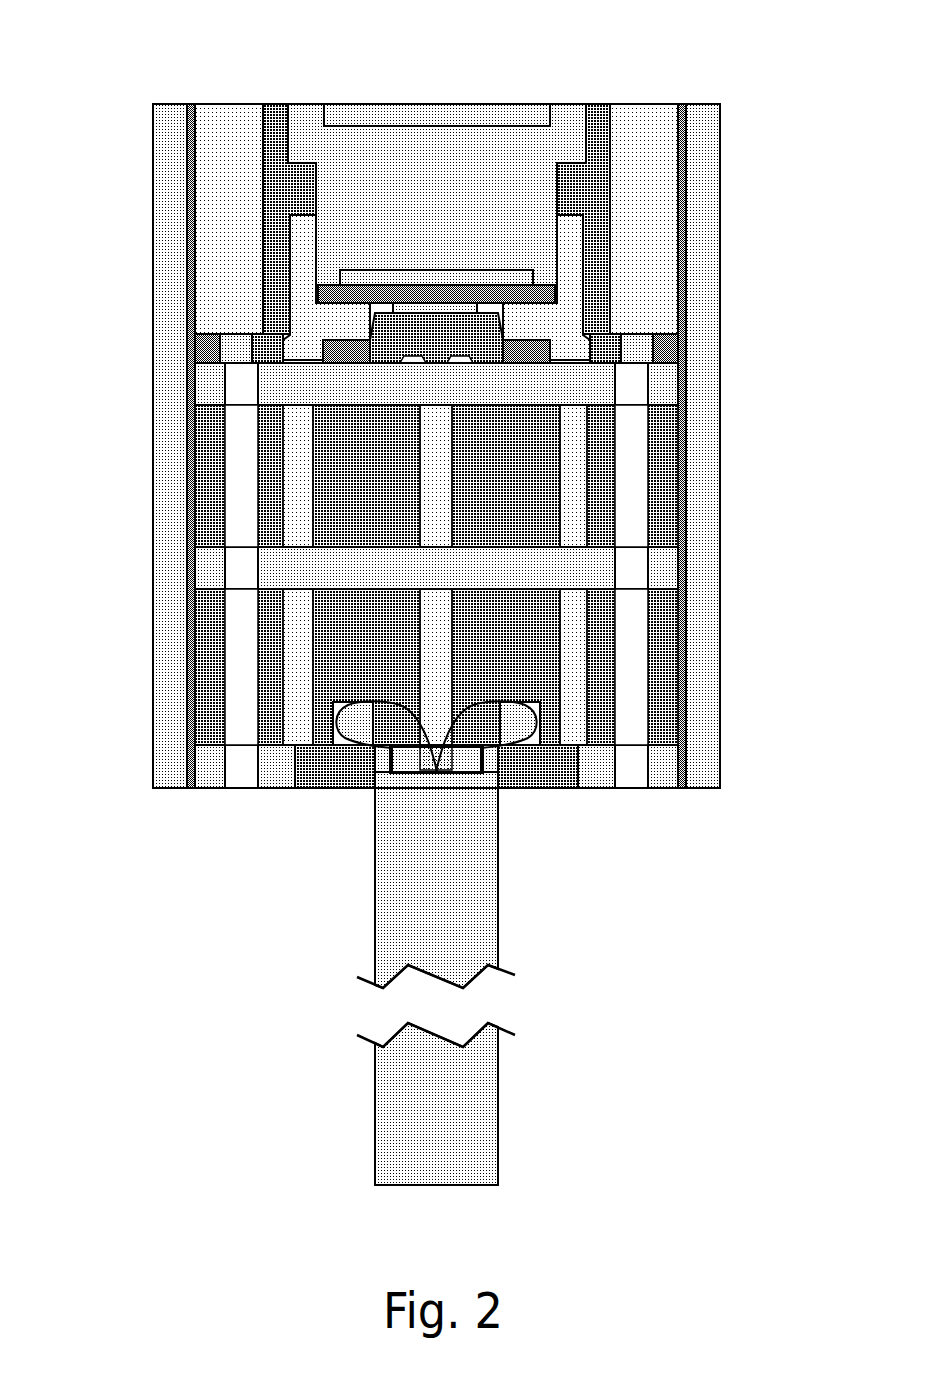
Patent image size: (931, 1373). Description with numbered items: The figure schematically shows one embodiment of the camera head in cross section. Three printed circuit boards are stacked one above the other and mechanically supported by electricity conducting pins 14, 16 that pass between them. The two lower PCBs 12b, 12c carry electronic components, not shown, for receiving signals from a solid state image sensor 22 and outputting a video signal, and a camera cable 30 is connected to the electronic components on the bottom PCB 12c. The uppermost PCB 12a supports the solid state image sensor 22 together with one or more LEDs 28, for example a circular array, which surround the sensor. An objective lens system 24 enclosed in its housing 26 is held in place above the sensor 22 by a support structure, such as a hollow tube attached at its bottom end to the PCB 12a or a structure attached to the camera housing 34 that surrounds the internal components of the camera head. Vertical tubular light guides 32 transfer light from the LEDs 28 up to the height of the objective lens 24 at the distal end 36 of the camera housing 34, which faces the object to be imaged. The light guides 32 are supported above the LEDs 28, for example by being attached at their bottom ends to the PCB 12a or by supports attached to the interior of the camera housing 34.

The uppermost PCB 12a is at (511, 405).
The lower PCB 12b is at (513, 604).
The lower PCB 12c is at (511, 806).
The electricity conducting pin 14 is at (329, 587).
The electricity conducting pin 16 is at (358, 587).
The solid state image sensor 22 is at (295, 365).
The objective lens system 24 is at (437, 69).
The lens housing 26 is at (408, 152).
The LED 28 is at (421, 289).
The camera cable 30 is at (361, 943).
The tubular light guide 32 is at (419, 204).
The camera housing 34 is at (484, 413).
The distal end 36 is at (439, 175).